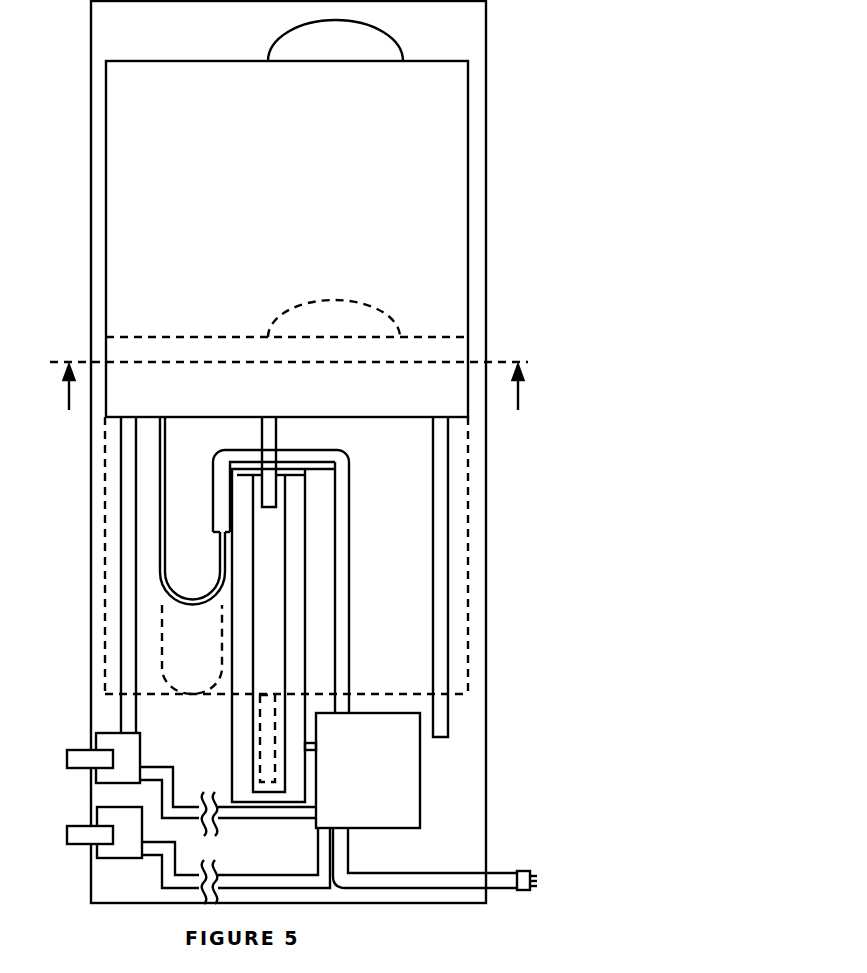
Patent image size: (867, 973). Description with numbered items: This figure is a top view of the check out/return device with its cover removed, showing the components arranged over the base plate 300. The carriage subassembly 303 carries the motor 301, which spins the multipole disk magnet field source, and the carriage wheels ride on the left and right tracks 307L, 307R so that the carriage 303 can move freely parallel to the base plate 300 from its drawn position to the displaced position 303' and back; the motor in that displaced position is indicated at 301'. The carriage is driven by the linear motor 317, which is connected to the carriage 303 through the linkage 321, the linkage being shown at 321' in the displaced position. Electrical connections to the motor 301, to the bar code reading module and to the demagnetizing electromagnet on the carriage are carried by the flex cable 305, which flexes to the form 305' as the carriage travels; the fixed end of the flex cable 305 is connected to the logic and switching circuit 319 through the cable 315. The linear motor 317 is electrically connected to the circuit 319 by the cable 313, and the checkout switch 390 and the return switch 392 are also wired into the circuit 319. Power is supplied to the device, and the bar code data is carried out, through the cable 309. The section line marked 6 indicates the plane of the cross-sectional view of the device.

The base plate 300 is at (447, 835).
The motor 301 is at (419, 40).
The dome lower position (phantom) 301' is at (340, 309).
The carriage subassembly 303 is at (246, 239).
The carriage moved position 303' is at (358, 555).
The flex cable 305 is at (188, 511).
The U-shaped tube lower position (phantom) 305' is at (123, 649).
The left track 307L is at (128, 630).
The right track 307R is at (438, 502).
The cable 309 is at (503, 870).
The cable 313 is at (320, 745).
The cable 315 is at (345, 565).
The linear motor 317 is at (323, 657).
The logic and switching circuit 319 is at (387, 760).
The linkage 321 is at (414, 462).
The inner tube lower position (phantom) 321' is at (143, 738).
The checkout switch 390 is at (90, 759).
The return switch 392 is at (91, 840).
The section line 6- 6 is at (289, 401).